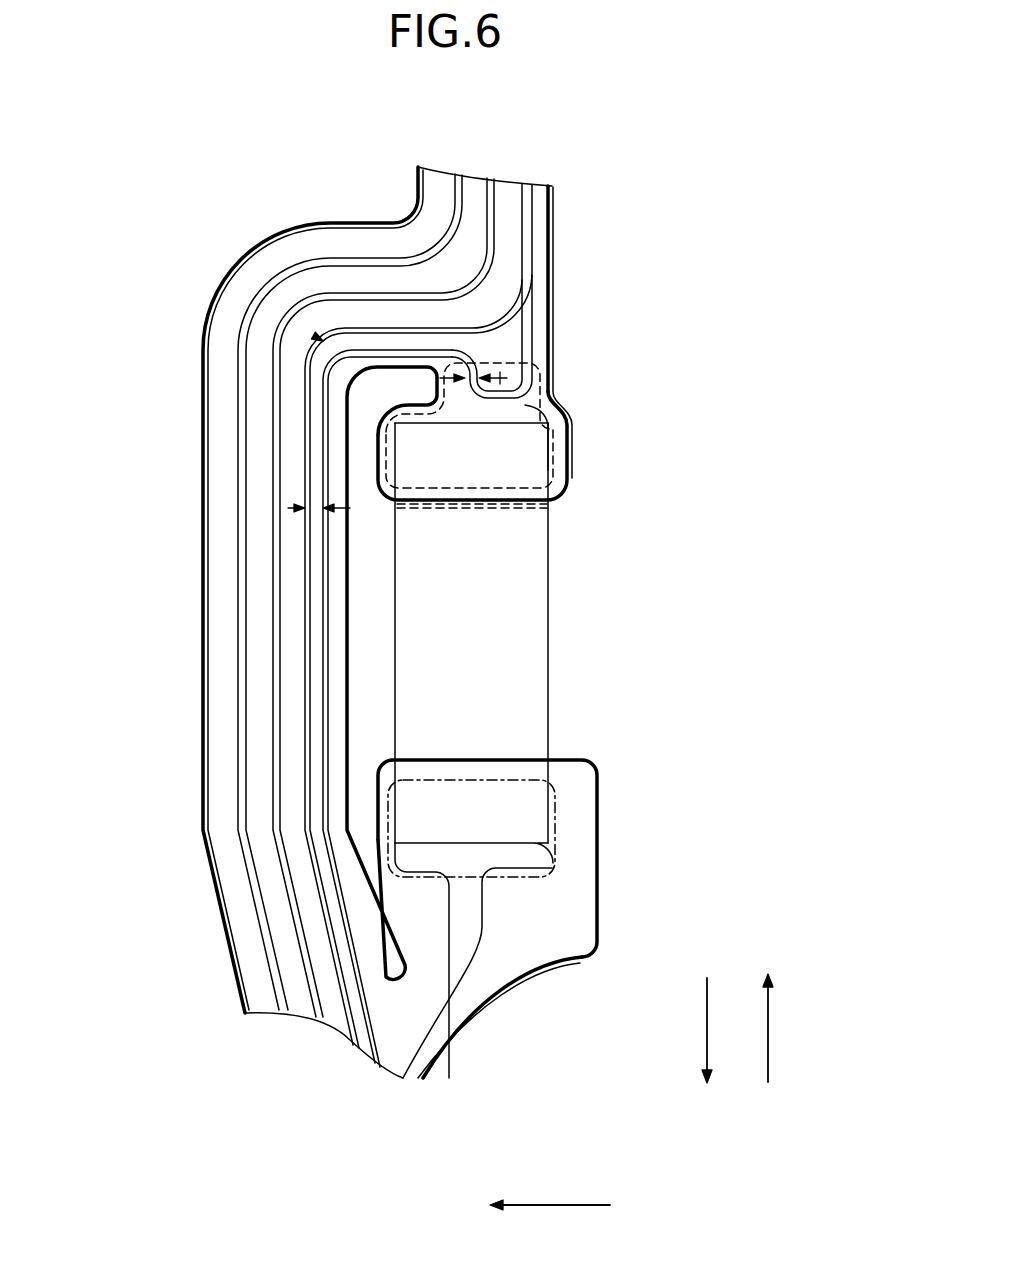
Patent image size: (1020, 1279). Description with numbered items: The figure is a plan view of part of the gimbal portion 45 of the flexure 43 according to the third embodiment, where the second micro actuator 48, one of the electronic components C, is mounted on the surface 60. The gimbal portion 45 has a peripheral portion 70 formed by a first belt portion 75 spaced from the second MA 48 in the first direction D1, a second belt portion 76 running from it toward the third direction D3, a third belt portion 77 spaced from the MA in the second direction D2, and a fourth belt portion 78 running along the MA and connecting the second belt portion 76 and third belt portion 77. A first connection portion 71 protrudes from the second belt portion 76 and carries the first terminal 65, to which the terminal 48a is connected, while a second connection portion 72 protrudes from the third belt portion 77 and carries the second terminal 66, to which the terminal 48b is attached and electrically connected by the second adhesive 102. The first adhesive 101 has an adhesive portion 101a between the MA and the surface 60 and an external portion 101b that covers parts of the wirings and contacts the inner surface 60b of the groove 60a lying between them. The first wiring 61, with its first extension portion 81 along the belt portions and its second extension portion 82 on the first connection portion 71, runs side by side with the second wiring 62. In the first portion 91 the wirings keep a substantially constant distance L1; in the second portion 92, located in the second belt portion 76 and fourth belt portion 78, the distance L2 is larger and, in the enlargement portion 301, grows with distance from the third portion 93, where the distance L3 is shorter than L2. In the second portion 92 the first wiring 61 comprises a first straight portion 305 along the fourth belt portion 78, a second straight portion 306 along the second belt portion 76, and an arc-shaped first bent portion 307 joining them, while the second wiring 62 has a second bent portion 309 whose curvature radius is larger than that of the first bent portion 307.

The flexure 43 is at (128, 144).
The gimbal portion 45 is at (461, 668).
The peripheral portion 70 is at (191, 471).
The fourth belt portion 78 is at (218, 578).
The second belt portion 76 is at (253, 245).
The third belt portion 77 is at (262, 1000).
The first belt portion 75 is at (540, 198).
The first wiring 61 is at (533, 235).
The surface 60 is at (298, 257).
The groove 60a is at (298, 428).
The inner surface 60b is at (318, 458).
The first bent portion 307 is at (272, 270).
The first straight portion 305 is at (308, 380).
The second straight portion 306 is at (370, 325).
The enlargement portion 301 is at (403, 310).
The second bent portion 309 is at (343, 369).
The first portion 91 is at (287, 543).
The second portion 92 is at (337, 310).
The third portion 93 is at (420, 384).
The first extension portion 81 is at (377, 325).
The second extension portion 82 is at (527, 343).
The second wiring 62 is at (325, 640).
The first terminal 65 is at (523, 407).
The second terminal 66 is at (520, 863).
The first connection portion 71 is at (569, 478).
The second connection portion 72 is at (601, 792).
The second micro actuator 48 is at (533, 655).
The electronic component C is at (537, 639).
The terminal 48a is at (522, 420).
The terminal 48b is at (553, 867).
The first adhesive 101 is at (556, 447).
The adhesive portion 101a is at (547, 459).
The external portion 101b is at (548, 364).
The second adhesive 102 is at (556, 835).
The distance L1 is at (288, 508).
The distance L2 is at (313, 337).
The distance L3 is at (500, 372).
The first direction D1 is at (786, 1028).
The second direction D2 is at (689, 1030).
The third direction D3 is at (550, 1193).